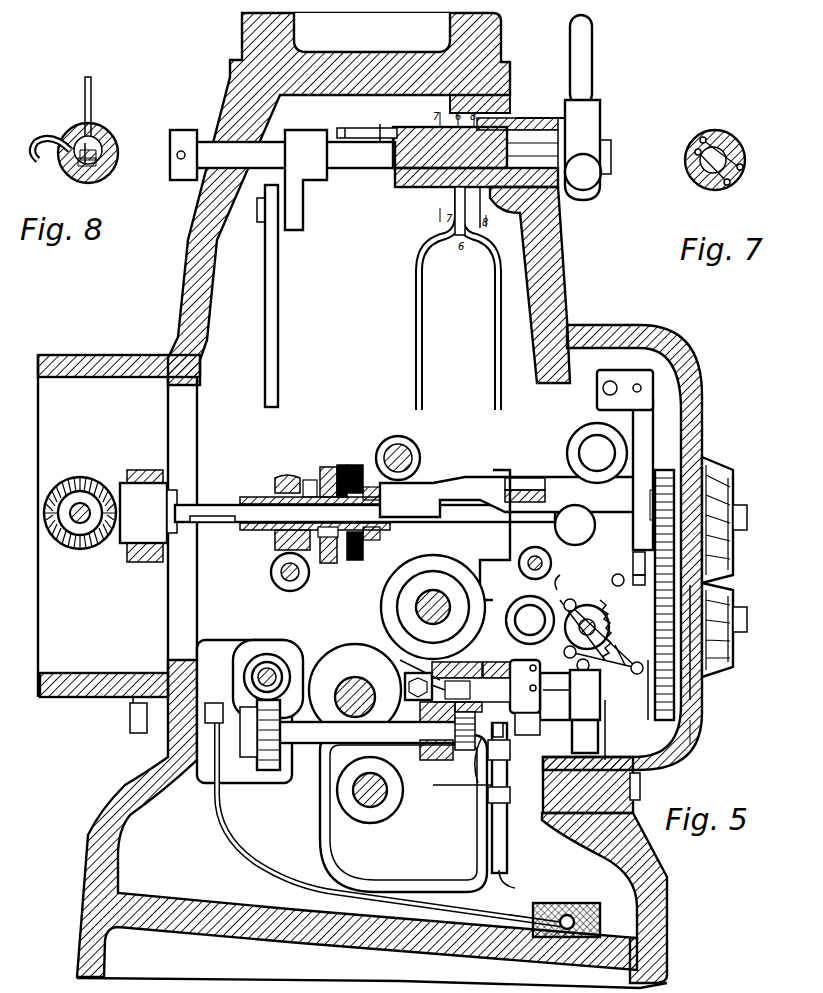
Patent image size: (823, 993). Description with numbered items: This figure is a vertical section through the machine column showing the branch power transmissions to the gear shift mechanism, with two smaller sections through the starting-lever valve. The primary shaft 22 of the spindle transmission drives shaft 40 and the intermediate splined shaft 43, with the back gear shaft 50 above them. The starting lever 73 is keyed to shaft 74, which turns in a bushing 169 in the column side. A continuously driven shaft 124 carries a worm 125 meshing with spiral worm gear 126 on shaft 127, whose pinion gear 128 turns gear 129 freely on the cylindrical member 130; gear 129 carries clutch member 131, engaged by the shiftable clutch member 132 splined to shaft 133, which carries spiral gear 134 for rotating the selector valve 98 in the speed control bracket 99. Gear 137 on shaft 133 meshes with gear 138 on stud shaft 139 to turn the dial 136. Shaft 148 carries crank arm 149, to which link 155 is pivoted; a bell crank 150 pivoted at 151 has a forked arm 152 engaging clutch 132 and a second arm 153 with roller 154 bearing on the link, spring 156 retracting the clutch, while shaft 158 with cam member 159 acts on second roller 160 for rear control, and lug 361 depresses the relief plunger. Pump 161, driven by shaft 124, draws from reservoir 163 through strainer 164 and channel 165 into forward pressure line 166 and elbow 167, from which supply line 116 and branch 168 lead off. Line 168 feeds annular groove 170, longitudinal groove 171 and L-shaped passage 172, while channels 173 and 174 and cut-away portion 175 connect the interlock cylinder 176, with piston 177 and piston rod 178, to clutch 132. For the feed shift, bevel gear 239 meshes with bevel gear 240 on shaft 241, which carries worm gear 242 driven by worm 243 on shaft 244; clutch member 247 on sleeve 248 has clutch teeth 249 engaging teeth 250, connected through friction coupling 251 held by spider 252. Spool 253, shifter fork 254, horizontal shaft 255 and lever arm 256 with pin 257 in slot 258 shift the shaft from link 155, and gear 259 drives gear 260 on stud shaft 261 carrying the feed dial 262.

In FIG. 5, the primary shaft 22 is at (385, 800).
In FIG. 5, the shaft 40 is at (345, 680).
In FIG. 5, the intermediate splined shaft 43 is at (420, 605).
In FIG. 5, the back gear shaft 50 is at (415, 458).
In FIG. 5, the starting lever 73 is at (595, 75).
In FIG. 5, the shaft 74 is at (365, 180).
In FIG. 8, the shaft 74 is at (105, 147).
In FIG. 7, the shaft 74 is at (730, 140).
In FIG. 5, the selector valve 98 is at (615, 640).
In FIG. 5, the speed control bracket 99 is at (700, 735).
In FIG. 5, the selector valve supply line 116 is at (520, 780).
In FIG. 5, the shaft 124 is at (262, 670).
In FIG. 5, the worm 125 is at (267, 665).
In FIG. 5, the spiral worm gear 126 is at (262, 775).
In FIG. 5, the shaft 127 is at (295, 760).
In FIG. 5, the pinion gear 128 is at (455, 760).
In FIG. 5, the gear 129 is at (395, 660).
In FIG. 5, the cylindrical member 130 is at (400, 675).
In FIG. 5, the clutch member 131 is at (481, 658).
In FIG. 5, the shiftable clutch member 132 is at (525, 720).
In FIG. 5, the shaft 133 is at (598, 735).
In FIG. 5, the spiral gear 134 is at (568, 706).
In FIG. 5, the dial 136 is at (725, 670).
In FIG. 5, the gear 137 is at (630, 740).
In FIG. 5, the gear 138 is at (650, 585).
In FIG. 5, the stud shaft 139 is at (740, 625).
In FIG. 5, the shaft 148 is at (605, 392).
In FIG. 5, the crank arm 149 is at (612, 380).
In FIG. 5, the bell crank 150 is at (545, 694).
In FIG. 5, the pivot 151 is at (500, 680).
In FIG. 5, the forked arm 152 is at (540, 720).
In FIG. 5, the second arm 153 is at (600, 700).
In FIG. 5, the roller 154 is at (675, 700).
In FIG. 5, the link 155 is at (650, 445).
In FIG. 5, the spring 156 is at (600, 620).
In FIG. 5, the shaft 158 is at (555, 580).
In FIG. 5, the cam member 159 is at (556, 605).
In FIG. 5, the second roller 160 is at (548, 625).
In FIG. 5, the pump 161 is at (245, 660).
In FIG. 5, the reservoir 163 is at (615, 915).
In FIG. 5, the strainer 164 is at (562, 905).
In FIG. 5, the channel 165 is at (505, 905).
In FIG. 5, the forward pressure line 166 is at (320, 690).
In FIG. 5, the elbow 167 is at (495, 790).
In FIG. 5, the pressure line 168 is at (496, 315).
In FIG. 5, the bushing 169 is at (410, 190).
In FIG. 8, the bushing 169 is at (116, 160).
In FIG. 7, the bushing 169 is at (697, 183).
In FIG. 5, the annular groove 170 is at (515, 118).
In FIG. 5, the longitudinal groove 171 is at (420, 190).
In FIG. 8, the longitudinal groove 171 is at (100, 178).
In FIG. 8, the L-shaped passage 172 is at (66, 175).
In FIG. 5, the channel 173 is at (415, 305).
In FIG. 8, the channel 173 is at (52, 140).
In FIG. 8, the channel 174 is at (85, 100).
In FIG. 8, the cut-away portion 175 is at (98, 140).
In FIG. 5, the cylinder 176 is at (415, 700).
In FIG. 5, the piston 177 is at (440, 738).
In FIG. 5, the piston rod 178 is at (510, 735).
In FIG. 5, the bevel gear 239 is at (55, 482).
In FIG. 5, the bevel gear 240 is at (118, 480).
In FIG. 5, the shaft 241 is at (210, 522).
In FIG. 5, the worm gear 242 is at (278, 480).
In FIG. 5, the worm 243 is at (275, 585).
In FIG. 5, the shaft 244 is at (280, 572).
In FIG. 5, the clutch member 247 is at (340, 465).
In FIG. 5, the sleeve 248 is at (325, 468).
In FIG. 5, the clutch teeth 249 is at (318, 545).
In FIG. 5, the clutch teeth 250 is at (308, 480).
In FIG. 5, the friction coupling 251 is at (360, 465).
In FIG. 5, the spider 252 is at (372, 487).
In FIG. 5, the spool 253 is at (537, 480).
In FIG. 5, the shifter fork 254 is at (540, 492).
In FIG. 5, the horizontal shaft 255 is at (493, 575).
In FIG. 5, the lever arm 256 is at (618, 575).
In FIG. 5, the pin 257 is at (740, 605).
In FIG. 5, the slot 258 is at (650, 570).
In FIG. 5, the gear 259 is at (675, 495).
In FIG. 5, the gear 260 is at (675, 510).
In FIG. 5, the stud shaft 261 is at (735, 500).
In FIG. 5, the feed dial 262 is at (740, 515).
In FIG. 5, the lug 361 is at (615, 655).